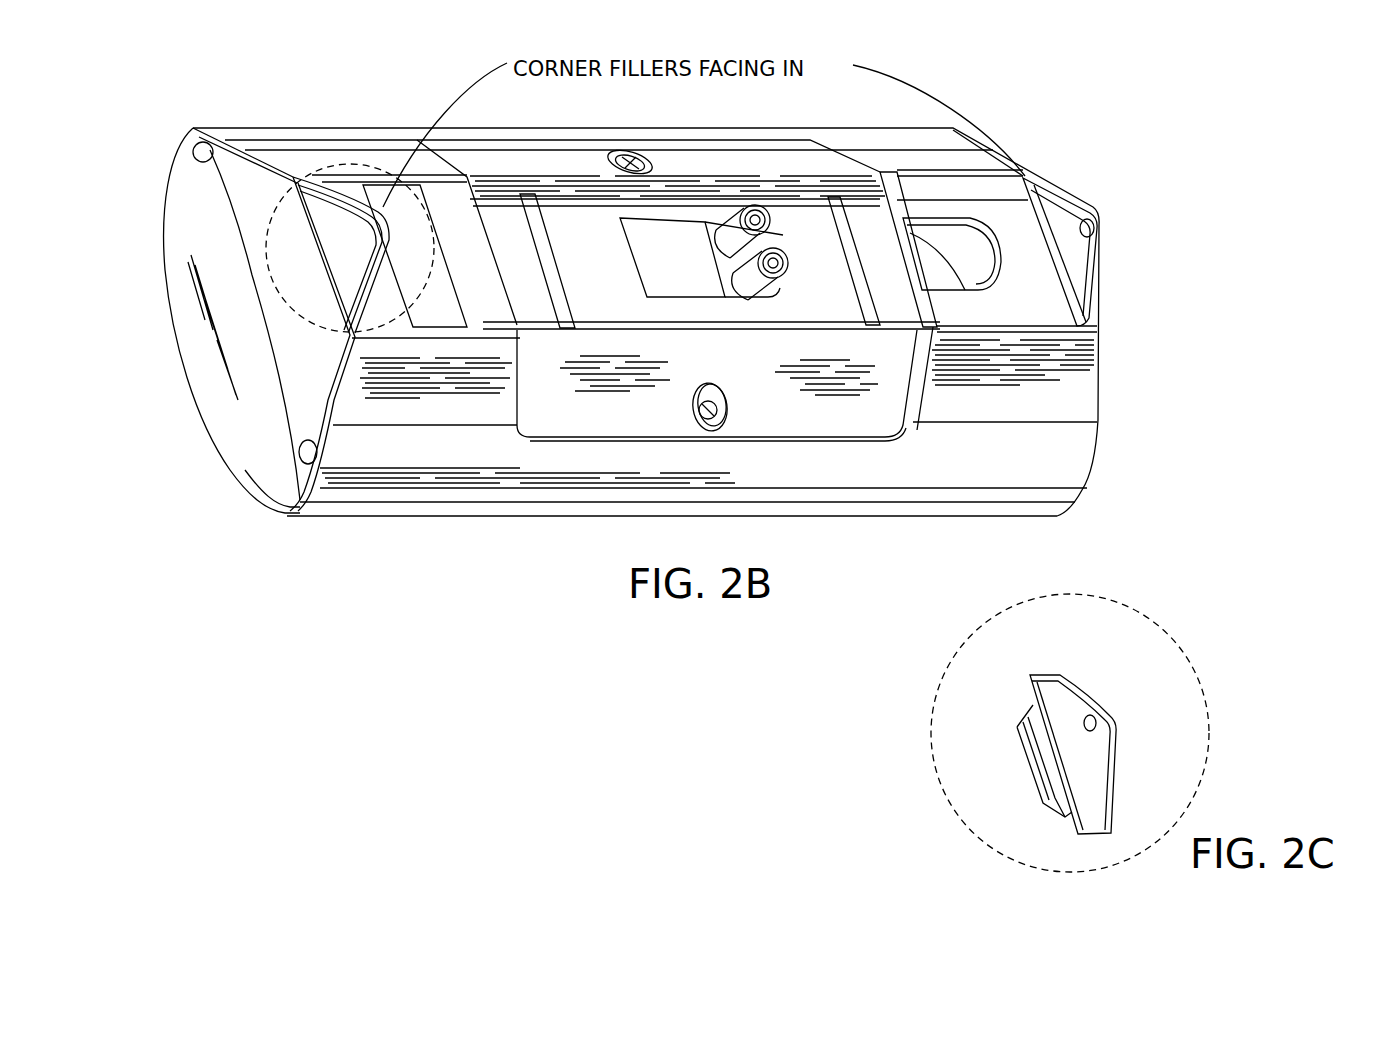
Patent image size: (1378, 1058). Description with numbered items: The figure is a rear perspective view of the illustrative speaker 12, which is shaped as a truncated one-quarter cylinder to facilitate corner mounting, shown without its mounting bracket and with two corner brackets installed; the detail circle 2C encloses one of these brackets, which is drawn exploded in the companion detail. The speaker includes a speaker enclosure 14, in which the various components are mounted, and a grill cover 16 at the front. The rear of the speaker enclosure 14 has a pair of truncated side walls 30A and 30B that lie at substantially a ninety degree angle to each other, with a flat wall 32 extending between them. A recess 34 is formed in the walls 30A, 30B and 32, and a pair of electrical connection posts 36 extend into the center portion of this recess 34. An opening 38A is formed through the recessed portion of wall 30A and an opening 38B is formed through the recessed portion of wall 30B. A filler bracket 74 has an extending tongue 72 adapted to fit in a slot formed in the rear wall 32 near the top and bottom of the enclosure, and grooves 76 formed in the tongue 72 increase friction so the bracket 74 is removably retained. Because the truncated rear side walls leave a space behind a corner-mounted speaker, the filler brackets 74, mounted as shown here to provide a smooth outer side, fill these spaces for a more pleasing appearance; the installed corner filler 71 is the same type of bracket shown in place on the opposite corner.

In FIG. 2B, the speaker 12 is at (334, 96).
In FIG. 2B, the speaker enclosure 14 is at (435, 453).
In FIG. 2B, the grill cover 16 is at (260, 477).
In FIG. 2B, the detail circle 2C is at (267, 235).
In FIG. 2C, the detail circle 2C is at (932, 710).
In FIG. 2B, the corner filler 71 is at (357, 258).
In FIG. 2B, the opening 38A is at (632, 150).
In FIG. 2B, the electrical connection posts 36 is at (772, 224).
In FIG. 2B, the recess 34 is at (782, 424).
In FIG. 2B, the opening 38B is at (718, 433).
In FIG. 2B, the flat wall 32 is at (992, 322).
In FIG. 2B, the truncated side wall 30A is at (1020, 170).
In FIG. 2B, the truncated side wall 30B is at (1068, 414).
In FIG. 2B, the filler bracket 74 is at (1060, 179).
In FIG. 2C, the filler bracket 74 is at (1097, 684).
In FIG. 2C, the tongue 72 is at (1023, 720).
In FIG. 2C, the grooves 76 is at (1040, 795).